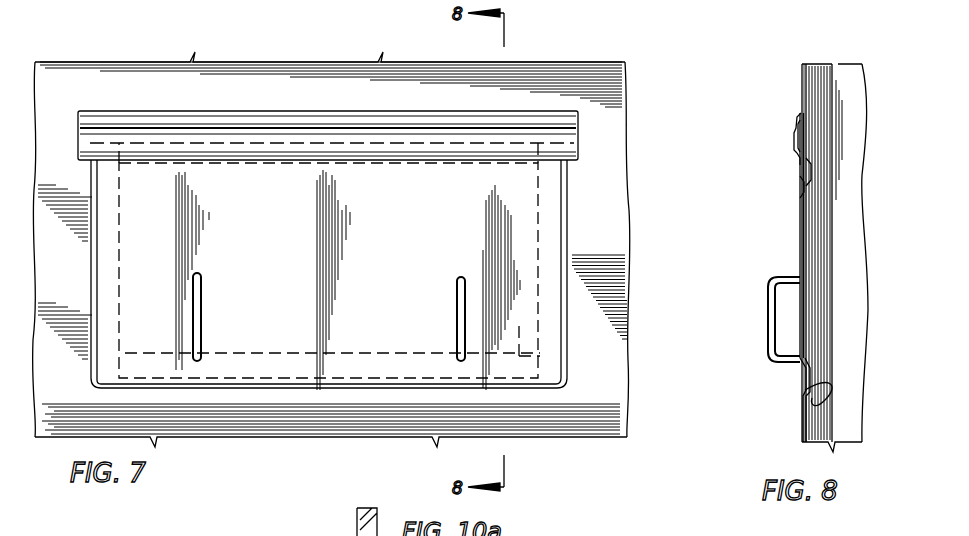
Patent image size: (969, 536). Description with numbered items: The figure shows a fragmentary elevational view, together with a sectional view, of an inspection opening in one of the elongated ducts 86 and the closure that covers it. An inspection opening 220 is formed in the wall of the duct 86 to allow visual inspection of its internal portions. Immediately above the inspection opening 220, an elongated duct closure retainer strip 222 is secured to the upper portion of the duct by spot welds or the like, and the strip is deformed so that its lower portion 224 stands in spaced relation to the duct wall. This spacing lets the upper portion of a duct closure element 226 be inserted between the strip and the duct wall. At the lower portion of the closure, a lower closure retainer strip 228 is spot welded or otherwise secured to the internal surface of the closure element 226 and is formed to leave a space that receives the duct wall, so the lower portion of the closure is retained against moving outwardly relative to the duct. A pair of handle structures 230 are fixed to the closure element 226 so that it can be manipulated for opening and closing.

In FIG. 7, the elongated duct 86 is at (577, 437).
In FIG. 8, the elongated duct 86 is at (808, 430).
In FIG. 7, the inspection opening 220 is at (528, 233).
In FIG. 8, the inspection opening 220 is at (800, 200).
In FIG. 7, the duct closure retainer strip 222 is at (582, 118).
In FIG. 8, the duct closure retainer strip 222 is at (797, 135).
In FIG. 7, the lower portion of the retainer strip 224 is at (578, 150).
In FIG. 8, the lower portion of the retainer strip 224 is at (796, 158).
In FIG. 8, the duct closure element 226 is at (800, 262).
In FIG. 7, the lower closure retainer strip 228 is at (520, 366).
In FIG. 8, the lower closure retainer strip 228 is at (812, 398).
In FIG. 7, the handle structure 230 is at (201, 273).
In FIG. 8, the handle structure 230 is at (768, 330).